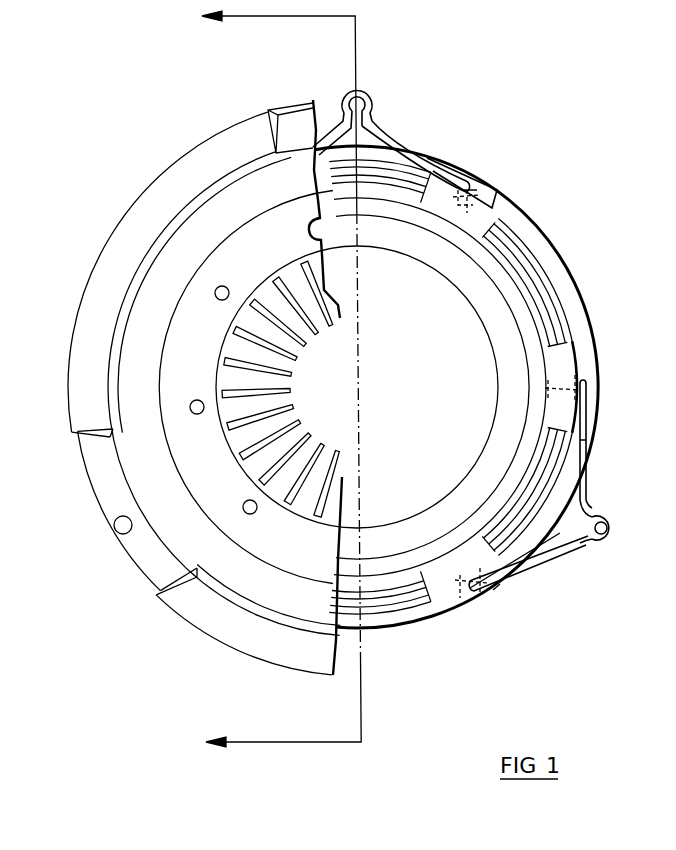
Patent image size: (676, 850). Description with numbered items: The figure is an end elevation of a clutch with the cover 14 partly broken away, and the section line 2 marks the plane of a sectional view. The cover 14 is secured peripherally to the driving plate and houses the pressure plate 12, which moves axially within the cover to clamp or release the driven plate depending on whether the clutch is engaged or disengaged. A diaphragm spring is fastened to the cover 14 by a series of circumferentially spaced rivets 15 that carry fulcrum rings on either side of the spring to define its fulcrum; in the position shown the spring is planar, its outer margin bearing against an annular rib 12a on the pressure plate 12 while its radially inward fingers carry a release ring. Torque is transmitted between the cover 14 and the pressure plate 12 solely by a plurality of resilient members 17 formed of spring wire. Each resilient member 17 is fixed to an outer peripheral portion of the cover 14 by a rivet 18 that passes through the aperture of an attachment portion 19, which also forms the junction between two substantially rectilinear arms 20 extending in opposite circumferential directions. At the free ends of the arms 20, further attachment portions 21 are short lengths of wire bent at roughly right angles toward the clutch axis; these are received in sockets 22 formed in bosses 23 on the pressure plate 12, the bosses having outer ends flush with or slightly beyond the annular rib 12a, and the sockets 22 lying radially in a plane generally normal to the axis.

The section line 2- 2 is at (271, 379).
The pressure plate 12 is at (543, 243).
The annular rib 12a is at (538, 283).
The cover 14 is at (225, 632).
The rivets 15 is at (197, 414).
The resilient members 17 is at (377, 121).
The rivet 18 is at (115, 525).
The attachment portion 19 is at (366, 91).
The arms 20 is at (425, 185).
The attachment portions 21 is at (483, 195).
The sockets 22 is at (508, 202).
The bosses 23 is at (575, 342).